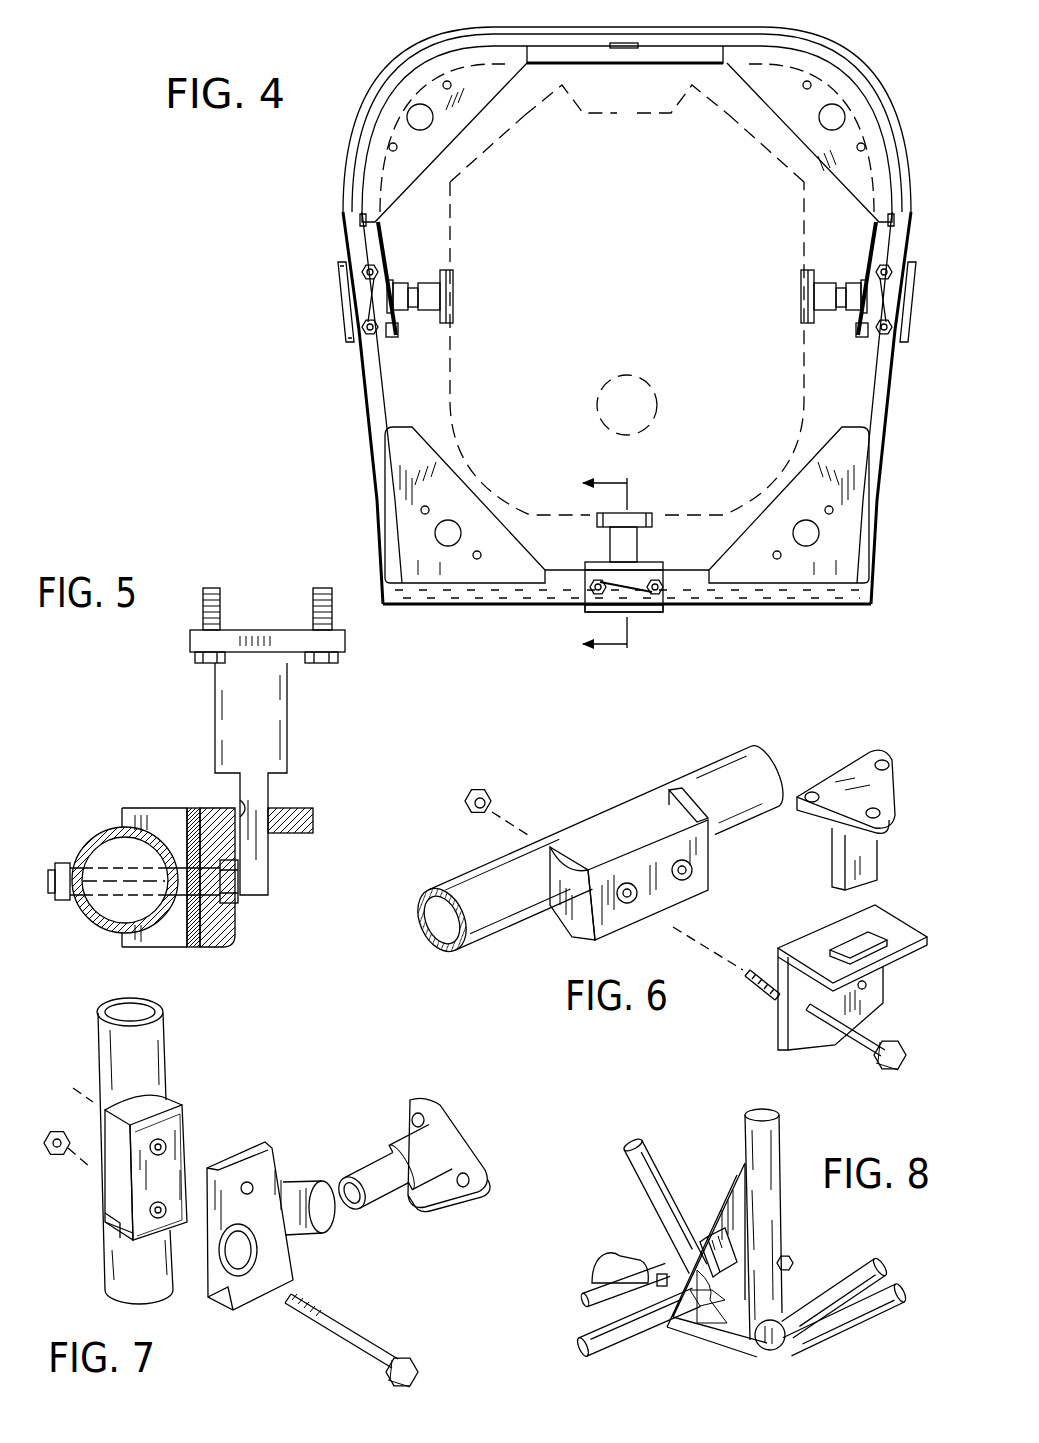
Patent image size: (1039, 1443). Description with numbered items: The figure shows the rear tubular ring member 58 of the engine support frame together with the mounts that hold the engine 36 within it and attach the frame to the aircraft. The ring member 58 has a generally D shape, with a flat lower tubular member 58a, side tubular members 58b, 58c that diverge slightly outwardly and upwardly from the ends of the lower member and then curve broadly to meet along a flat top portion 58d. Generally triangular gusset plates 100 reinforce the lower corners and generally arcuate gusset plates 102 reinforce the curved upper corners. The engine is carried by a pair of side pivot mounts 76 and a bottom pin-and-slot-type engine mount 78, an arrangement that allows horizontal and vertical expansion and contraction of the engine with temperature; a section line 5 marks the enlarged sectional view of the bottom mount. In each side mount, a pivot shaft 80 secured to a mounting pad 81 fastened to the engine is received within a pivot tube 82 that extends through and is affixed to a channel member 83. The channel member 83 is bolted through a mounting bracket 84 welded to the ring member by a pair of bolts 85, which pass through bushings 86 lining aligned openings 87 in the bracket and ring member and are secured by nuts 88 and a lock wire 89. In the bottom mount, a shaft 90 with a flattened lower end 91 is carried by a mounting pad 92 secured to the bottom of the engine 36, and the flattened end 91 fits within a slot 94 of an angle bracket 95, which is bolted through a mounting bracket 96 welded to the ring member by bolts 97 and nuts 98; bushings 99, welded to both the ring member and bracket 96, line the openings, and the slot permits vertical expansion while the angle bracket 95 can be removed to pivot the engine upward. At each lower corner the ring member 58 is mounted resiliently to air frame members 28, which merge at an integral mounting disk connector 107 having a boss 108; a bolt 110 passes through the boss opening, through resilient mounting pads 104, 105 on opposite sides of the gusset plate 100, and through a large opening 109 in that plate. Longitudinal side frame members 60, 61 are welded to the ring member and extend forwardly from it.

In FIG. 4, the tubular ring member 58 is at (610, 335).
In FIG. 5, the tubular ring member 58 is at (100, 828).
In FIG. 6, the tubular ring member 58 is at (462, 877).
In FIG. 7, the tubular ring member 58 is at (158, 1055).
In FIG. 8, the tubular ring member 58 is at (600, 1270).
In FIG. 4, the flat lower tubular member 58a is at (467, 605).
In FIG. 8, the flat lower tubular member 58a is at (776, 1346).
In FIG. 4, the side tubular member 58b is at (362, 416).
In FIG. 4, the side tubular member 58c is at (893, 378).
In FIG. 8, the side tubular member 58c is at (779, 1128).
In FIG. 4, the flat top portion 58d is at (660, 36).
In FIG. 4, the arcuate gusset plate 102 is at (462, 140).
In FIG. 4, the triangular gusset plate 100 is at (432, 458).
In FIG. 8, the triangular gusset plate 100 is at (735, 1195).
In FIG. 4, the engine 36 is at (641, 274).
In FIG. 4, the pivot mount 76 is at (610, 286).
In FIG. 7, the pivot mount 76 is at (393, 1248).
In FIG. 4, the pivot tube 82 is at (403, 280).
In FIG. 7, the pivot tube 82 is at (318, 1188).
In FIG. 4, the mounting bracket 84 is at (340, 295).
In FIG. 7, the mounting bracket 84 is at (124, 1171).
In FIG. 4, the lock wire 89 is at (370, 300).
In FIG. 4, the nut 88 is at (370, 336).
In FIG. 7, the nut 88 is at (57, 1130).
In FIG. 4, the mounting pad 81 is at (455, 300).
In FIG. 7, the mounting pad 81 is at (425, 1103).
In FIG. 4, the pivot shaft 80 is at (408, 314).
In FIG. 7, the pivot shaft 80 is at (355, 1178).
In FIG. 4, the large opening 109 is at (448, 547).
In FIG. 4, the pin-and-slot-type engine mount 78 is at (619, 565).
In FIG. 4, the mounting pad 92 is at (605, 515).
In FIG. 5, the mounting pad 92 is at (190, 640).
In FIG. 6, the mounting pad 92 is at (845, 782).
In FIG. 4, the shaft 90 is at (637, 547).
In FIG. 5, the shaft 90 is at (215, 712).
In FIG. 6, the shaft 90 is at (832, 840).
In FIG. 5, the flattened lower end 91 is at (270, 792).
In FIG. 6, the flattened lower end 91 is at (877, 862).
In FIG. 5, the slot 94 is at (242, 812).
In FIG. 6, the slot 94 is at (855, 942).
In FIG. 5, the angle bracket 95 is at (220, 937).
In FIG. 6, the angle bracket 95 is at (778, 1025).
In FIG. 4, the mounting bracket 96 is at (645, 612).
In FIG. 5, the mounting bracket 96 is at (160, 808).
In FIG. 6, the mounting bracket 96 is at (565, 917).
In FIG. 5, the bolt 97 is at (232, 905).
In FIG. 6, the bolt 97 is at (862, 1030).
In FIG. 4, the nut 98 is at (595, 590).
In FIG. 5, the nut 98 is at (68, 900).
In FIG. 6, the nut 98 is at (477, 789).
In FIG. 5, the bushing 99 is at (105, 868).
In FIG. 6, the bushing 99 is at (627, 903).
In FIG. 4, the section line 5- 5 is at (612, 563).
In FIG. 7, the opening 87 is at (160, 1203).
In FIG. 7, the bushing 86 is at (150, 1210).
In FIG. 7, the channel member 83 is at (247, 1312).
In FIG. 7, the bolt 85 is at (345, 1345).
In FIG. 8, the air frame member 28 is at (638, 1180).
In FIG. 8, the resilient mounting pad 104 is at (720, 1232).
In FIG. 8, the resilient mounting pad 105 is at (790, 1255).
In FIG. 8, the bolt 110 is at (662, 1272).
In FIG. 8, the boss 108 is at (680, 1292).
In FIG. 8, the mounting disk connector 107 is at (722, 1302).
In FIG. 8, the side frame member 60 is at (847, 1255).
In FIG. 8, the side frame member 61 is at (882, 1312).